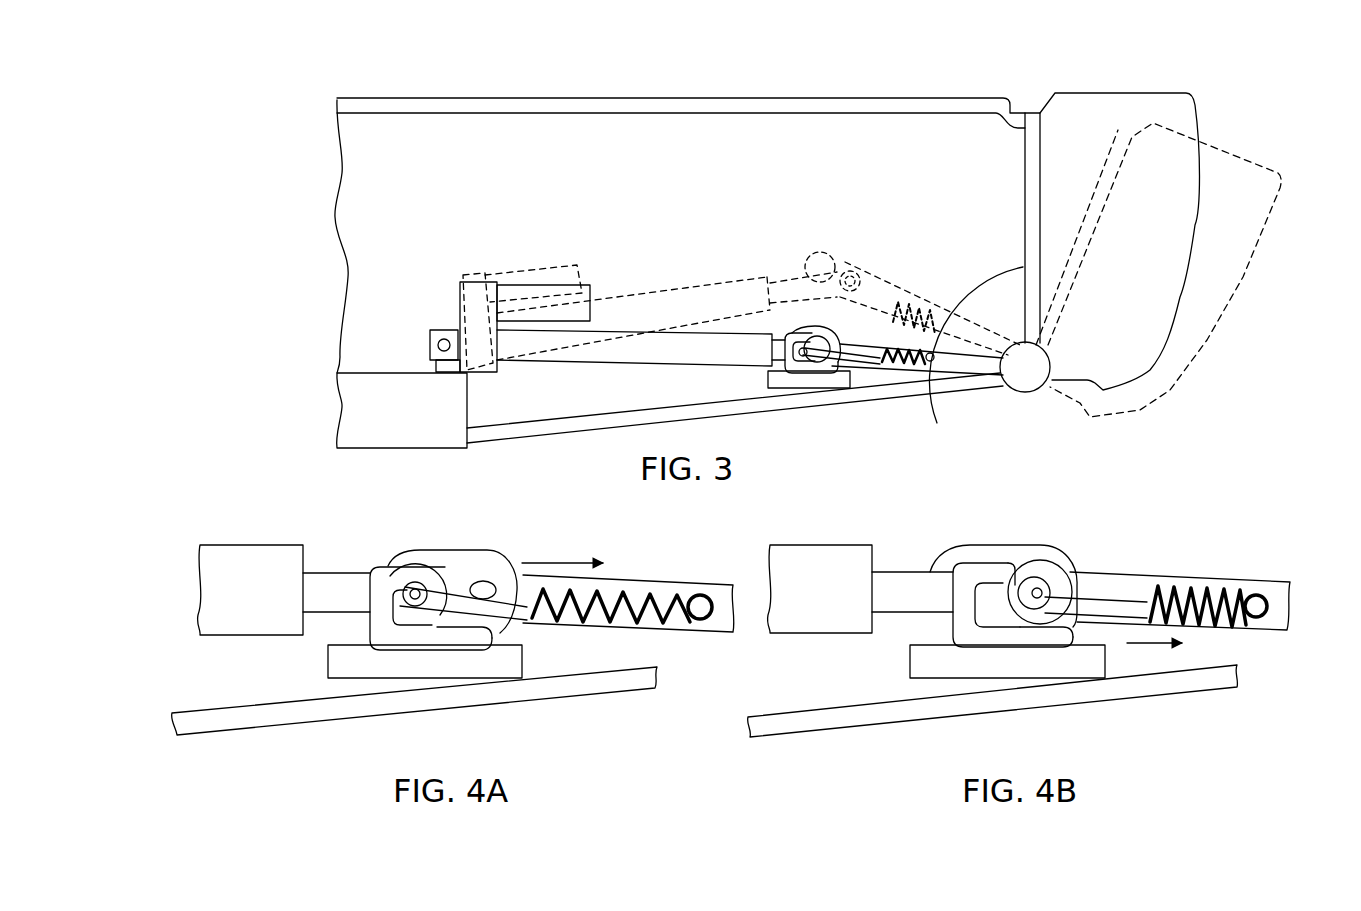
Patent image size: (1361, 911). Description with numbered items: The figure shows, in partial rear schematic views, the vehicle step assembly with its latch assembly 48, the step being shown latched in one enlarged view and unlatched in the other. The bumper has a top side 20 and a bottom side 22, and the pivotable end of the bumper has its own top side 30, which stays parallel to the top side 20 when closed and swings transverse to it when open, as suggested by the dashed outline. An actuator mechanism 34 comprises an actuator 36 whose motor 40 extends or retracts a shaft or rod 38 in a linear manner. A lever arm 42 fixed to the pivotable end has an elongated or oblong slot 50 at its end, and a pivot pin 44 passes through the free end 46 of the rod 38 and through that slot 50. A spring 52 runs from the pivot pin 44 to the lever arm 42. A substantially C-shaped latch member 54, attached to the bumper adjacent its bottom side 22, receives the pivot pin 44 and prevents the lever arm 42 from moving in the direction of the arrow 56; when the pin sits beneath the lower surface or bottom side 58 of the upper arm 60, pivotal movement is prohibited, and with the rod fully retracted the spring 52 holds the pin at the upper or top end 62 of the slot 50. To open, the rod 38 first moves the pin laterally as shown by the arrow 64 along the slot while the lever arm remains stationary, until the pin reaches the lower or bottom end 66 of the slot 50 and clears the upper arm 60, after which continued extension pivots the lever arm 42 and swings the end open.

In FIG. 3, the top side of bumper 20 is at (700, 97).
In FIG. 3, the bottom side of bumper 22 is at (843, 400).
In FIG. 4A, the bottom side of bumper 22 is at (255, 720).
In FIG. 4B, the bottom side of bumper 22 is at (920, 713).
In FIG. 3, the top side of pivotable end 30 is at (1141, 93).
In FIG. 3, the actuator mechanism 34 is at (711, 268).
In FIG. 4A, the actuator mechanism 34 is at (268, 512).
In FIG. 4B, the actuator mechanism 34 is at (841, 536).
In FIG. 3, the actuator 36 is at (650, 358).
In FIG. 4A, the actuator 36 is at (240, 620).
In FIG. 4B, the actuator 36 is at (808, 622).
In FIG. 3, the shaft or rod 38 is at (890, 270).
In FIG. 4A, the shaft or rod 38 is at (318, 613).
In FIG. 4B, the shaft or rod 38 is at (893, 613).
In FIG. 3, the motor 40 is at (593, 302).
In FIG. 3, the lever arm 42 is at (940, 363).
In FIG. 4A, the lever arm 42 is at (722, 588).
In FIG. 4B, the lever arm 42 is at (1135, 580).
In FIG. 3, the pivot pin 44 is at (801, 380).
In FIG. 4A, the pivot pin 44 is at (397, 650).
In FIG. 4B, the pivot pin 44 is at (1055, 548).
In FIG. 3, the free end of shaft or rod 46 is at (856, 300).
In FIG. 4A, the free end of shaft or rod 46 is at (498, 553).
In FIG. 4B, the free end of shaft or rod 46 is at (975, 540).
In FIG. 3, the latch assembly 48 is at (772, 360).
In FIG. 4A, the latch assembly 48 is at (366, 563).
In FIG. 4B, the latch assembly 48 is at (945, 631).
In FIG. 3, the elongated or oblong slot 50 is at (827, 273).
In FIG. 4A, the elongated or oblong slot 50 is at (505, 622).
In FIG. 4B, the elongated or oblong slot 50 is at (1018, 650).
In FIG. 4A, the spring 52 is at (622, 582).
In FIG. 4B, the spring 52 is at (1232, 585).
In FIG. 3, the C-shaped latch member 54 is at (917, 187).
In FIG. 4A, the C-shaped latch member 54 is at (370, 620).
In FIG. 4B, the C-shaped latch member 54 is at (975, 650).
In FIG. 4A, the arrow 56 is at (440, 488).
In FIG. 4B, the arrow 56 is at (1090, 480).
In FIG. 4A, the lower surface or bottom side of upper arm 58 is at (417, 590).
In FIG. 4B, the lower surface or bottom side of upper arm 58 is at (1013, 566).
In FIG. 3, the upper arm of C-shaped member 60 is at (817, 349).
In FIG. 4A, the upper arm of C-shaped member 60 is at (392, 570).
In FIG. 4B, the upper arm of C-shaped member 60 is at (991, 563).
In FIG. 3, the upper or top end of slot 62 is at (830, 267).
In FIG. 4A, the arrow 64 is at (560, 562).
In FIG. 4B, the arrow 64 is at (1140, 660).
In FIG. 3, the lower or bottom end of slot 66 is at (837, 340).
In FIG. 4A, the lower or bottom end of slot 66 is at (470, 580).